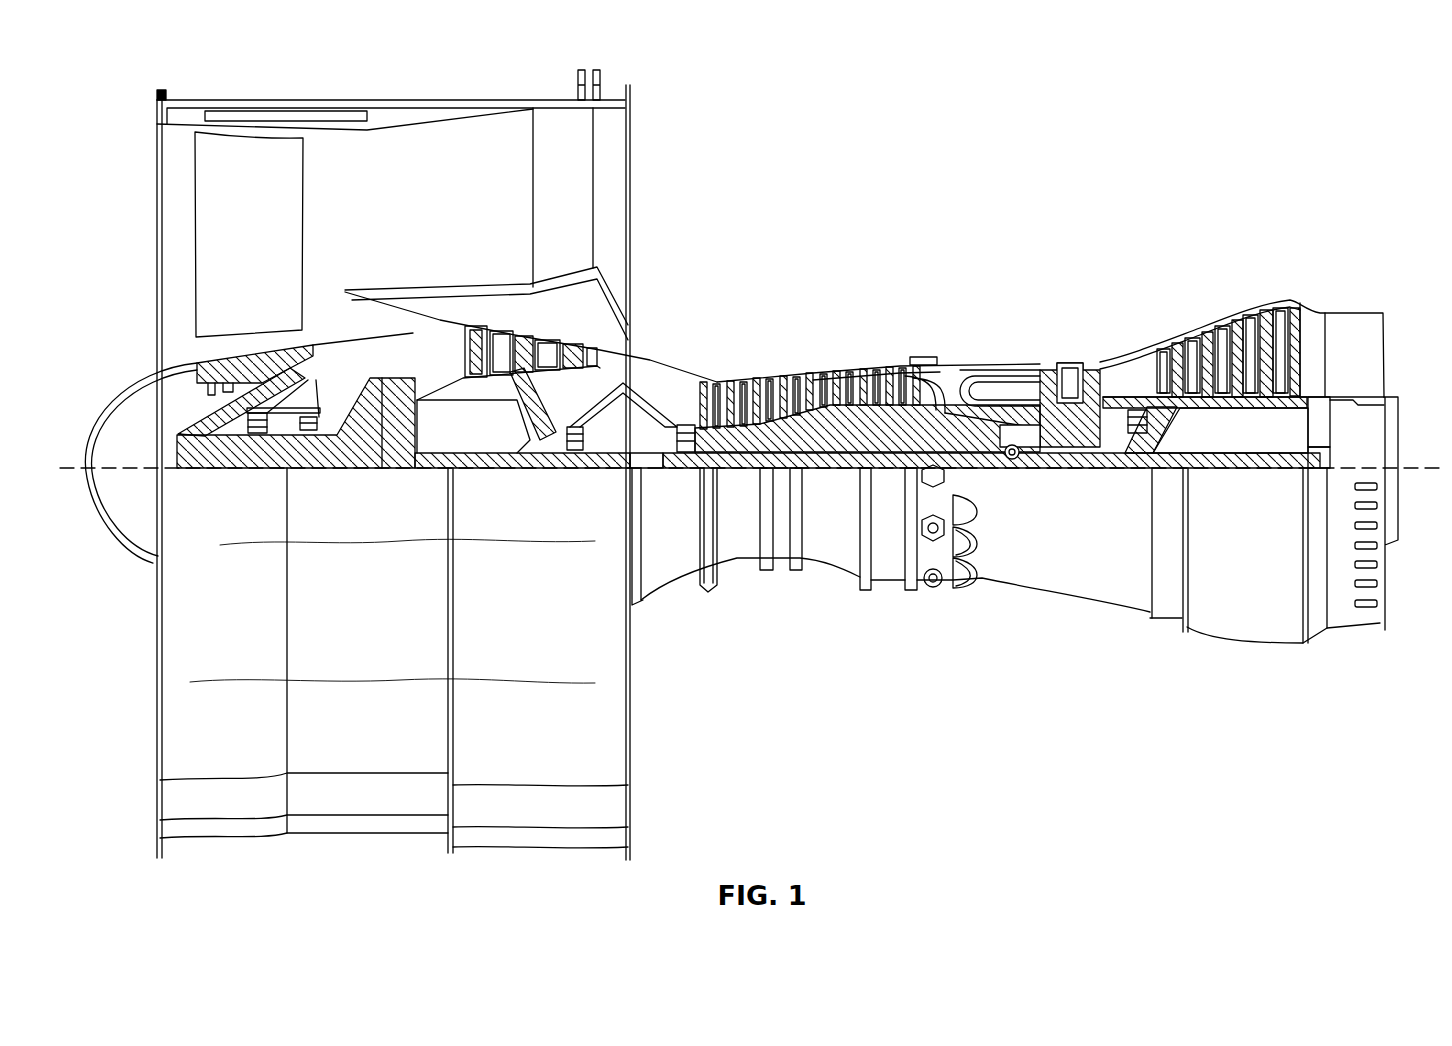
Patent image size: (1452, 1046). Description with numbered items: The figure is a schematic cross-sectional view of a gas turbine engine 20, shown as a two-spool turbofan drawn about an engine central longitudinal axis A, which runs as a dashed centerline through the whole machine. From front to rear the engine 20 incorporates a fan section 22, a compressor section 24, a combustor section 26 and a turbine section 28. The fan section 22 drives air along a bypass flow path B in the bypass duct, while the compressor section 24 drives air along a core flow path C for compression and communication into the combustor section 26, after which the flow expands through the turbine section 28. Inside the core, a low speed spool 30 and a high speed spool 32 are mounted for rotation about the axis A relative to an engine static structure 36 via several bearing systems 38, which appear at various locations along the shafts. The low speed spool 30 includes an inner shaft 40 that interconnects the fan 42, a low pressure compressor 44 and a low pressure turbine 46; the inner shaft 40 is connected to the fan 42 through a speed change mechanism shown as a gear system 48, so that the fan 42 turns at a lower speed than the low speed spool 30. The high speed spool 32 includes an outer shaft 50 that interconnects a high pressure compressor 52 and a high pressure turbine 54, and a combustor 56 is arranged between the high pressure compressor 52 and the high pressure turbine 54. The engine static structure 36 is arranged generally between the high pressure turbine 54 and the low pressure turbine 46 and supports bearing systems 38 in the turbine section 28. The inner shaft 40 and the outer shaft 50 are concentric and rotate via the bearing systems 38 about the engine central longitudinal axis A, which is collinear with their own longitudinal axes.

The gas turbine engine 20 is at (1282, 150).
The fan section 22 is at (263, 92).
The compressor section 24 is at (828, 308).
The combustor section 26 is at (988, 311).
The turbine section 28 is at (1195, 286).
The low speed spool 30 is at (855, 474).
The high speed spool 32 is at (907, 400).
The engine static structure 36 is at (892, 592).
The bearing systems 38 is at (262, 427).
The inner shaft 40 is at (647, 460).
The fan 42 is at (276, 230).
The low pressure compressor 44 is at (547, 337).
The low pressure turbine 46 is at (1237, 327).
The gear system 48 is at (397, 437).
The outer shaft 50 is at (1018, 448).
The high pressure compressor 52 is at (810, 437).
The high pressure turbine 54 is at (1072, 362).
The combustor 56 is at (993, 383).
The engine central longitudinal axis A is at (1410, 464).
The bypass flow path B is at (483, 197).
The core flow path C is at (376, 332).